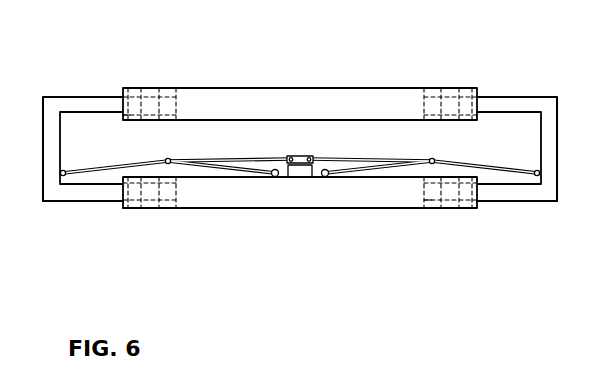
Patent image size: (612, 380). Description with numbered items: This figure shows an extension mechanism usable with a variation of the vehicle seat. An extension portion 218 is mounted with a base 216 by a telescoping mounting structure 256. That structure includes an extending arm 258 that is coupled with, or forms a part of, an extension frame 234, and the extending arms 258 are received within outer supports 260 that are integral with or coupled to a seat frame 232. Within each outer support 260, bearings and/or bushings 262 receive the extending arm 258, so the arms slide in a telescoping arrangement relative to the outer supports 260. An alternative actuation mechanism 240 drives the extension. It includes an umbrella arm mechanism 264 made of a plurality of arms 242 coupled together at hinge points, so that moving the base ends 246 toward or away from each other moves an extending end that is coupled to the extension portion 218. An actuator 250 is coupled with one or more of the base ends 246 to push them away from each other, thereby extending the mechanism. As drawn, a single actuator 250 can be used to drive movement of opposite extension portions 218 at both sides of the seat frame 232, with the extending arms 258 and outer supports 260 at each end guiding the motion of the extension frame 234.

The base 216 is at (289, 208).
The extension portion 218 is at (85, 212).
The seat frame 232 is at (350, 102).
The extension frame 234 is at (50, 139).
The actuation mechanism 240 is at (299, 139).
The arms 242 is at (125, 165).
The base ends 246 is at (63, 171).
The actuator 250 is at (300, 177).
The telescoping mounting structure 256 is at (144, 216).
The extending arm 258 is at (97, 103).
The outer support 260 is at (155, 87).
The bearings and/or bushings 262 is at (124, 117).
The umbrella arm mechanism 264 is at (329, 152).